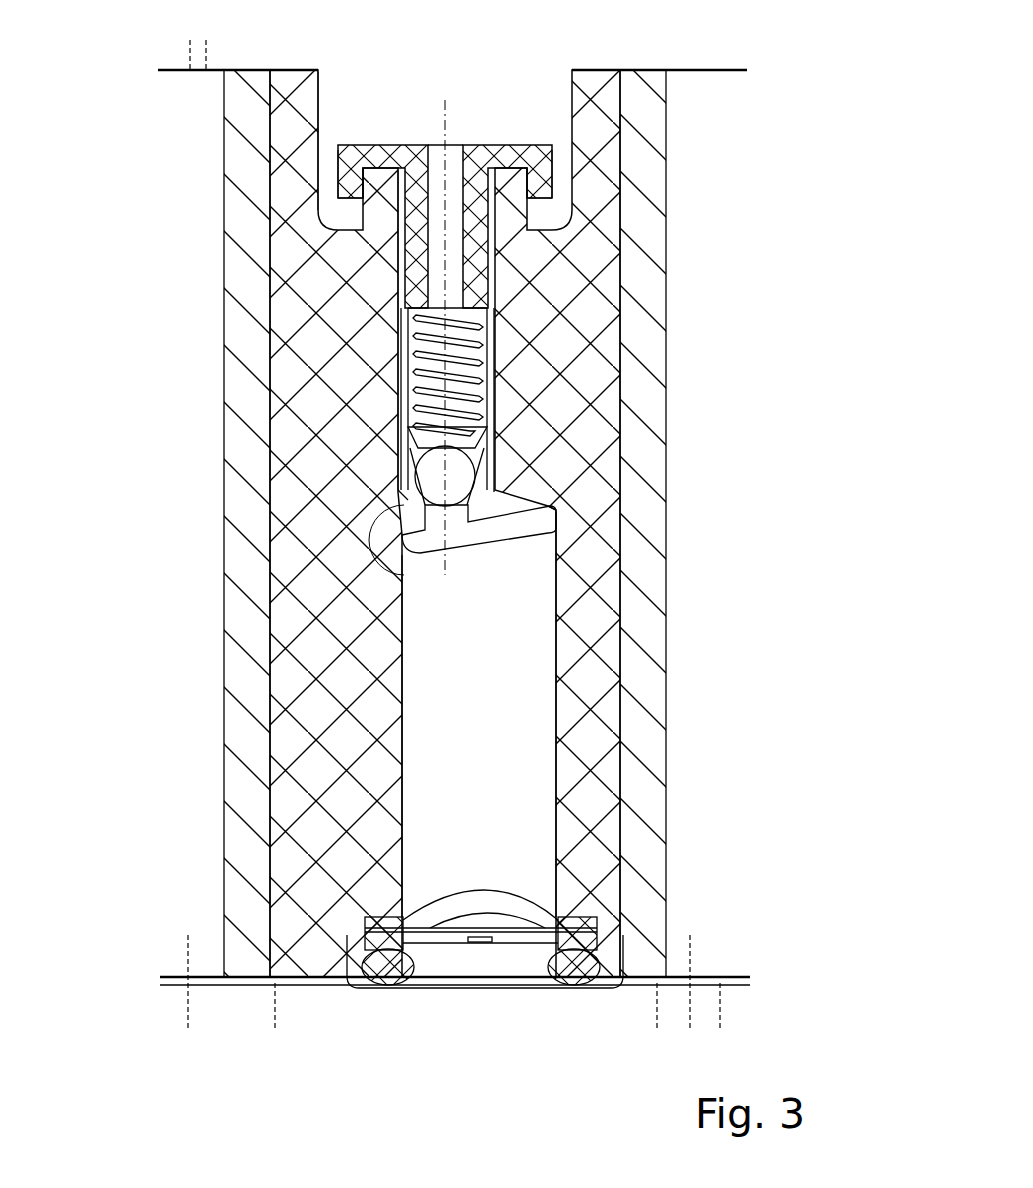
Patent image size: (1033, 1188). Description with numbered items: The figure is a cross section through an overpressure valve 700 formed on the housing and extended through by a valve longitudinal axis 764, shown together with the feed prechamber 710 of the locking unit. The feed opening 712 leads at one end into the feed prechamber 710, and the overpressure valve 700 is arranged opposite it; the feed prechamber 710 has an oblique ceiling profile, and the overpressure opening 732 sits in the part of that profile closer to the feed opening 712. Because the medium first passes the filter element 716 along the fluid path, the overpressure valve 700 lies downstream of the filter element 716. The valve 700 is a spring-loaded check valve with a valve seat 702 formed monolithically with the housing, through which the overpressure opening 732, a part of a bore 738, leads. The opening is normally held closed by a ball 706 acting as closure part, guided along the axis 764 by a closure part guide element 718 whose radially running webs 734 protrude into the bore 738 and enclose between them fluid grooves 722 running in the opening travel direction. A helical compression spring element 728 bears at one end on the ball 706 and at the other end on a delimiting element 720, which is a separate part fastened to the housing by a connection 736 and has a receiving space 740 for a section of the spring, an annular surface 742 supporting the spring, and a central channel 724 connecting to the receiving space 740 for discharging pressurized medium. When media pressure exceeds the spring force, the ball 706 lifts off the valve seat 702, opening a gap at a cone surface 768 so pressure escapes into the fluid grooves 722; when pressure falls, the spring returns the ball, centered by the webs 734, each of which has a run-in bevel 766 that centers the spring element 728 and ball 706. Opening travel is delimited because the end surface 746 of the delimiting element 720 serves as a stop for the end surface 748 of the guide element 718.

The overpressure valve 700 is at (600, 398).
The valve seat 702 is at (556, 520).
The ball 706 is at (560, 505).
The feed prechamber 710 is at (545, 672).
The feed opening 712 is at (543, 988).
The filter element 716 is at (597, 925).
The closure part guide element 718 is at (420, 505).
The delimiting element 720 is at (398, 388).
The fluid groove 722 is at (415, 445).
The central channel 724 is at (398, 325).
The spring element 728 is at (488, 372).
The overpressure opening 732 is at (402, 575).
The web 734 is at (498, 440).
The connection 736 is at (337, 188).
The bore 738 is at (398, 292).
The receiving space 740 is at (497, 328).
The annular surface 742 is at (505, 258).
The end surface 746 is at (425, 435).
The end surface 748 is at (405, 490).
The valve longitudinal axis 764 is at (444, 110).
The run-in bevel 766 is at (490, 450).
The cone surface 768 is at (398, 545).